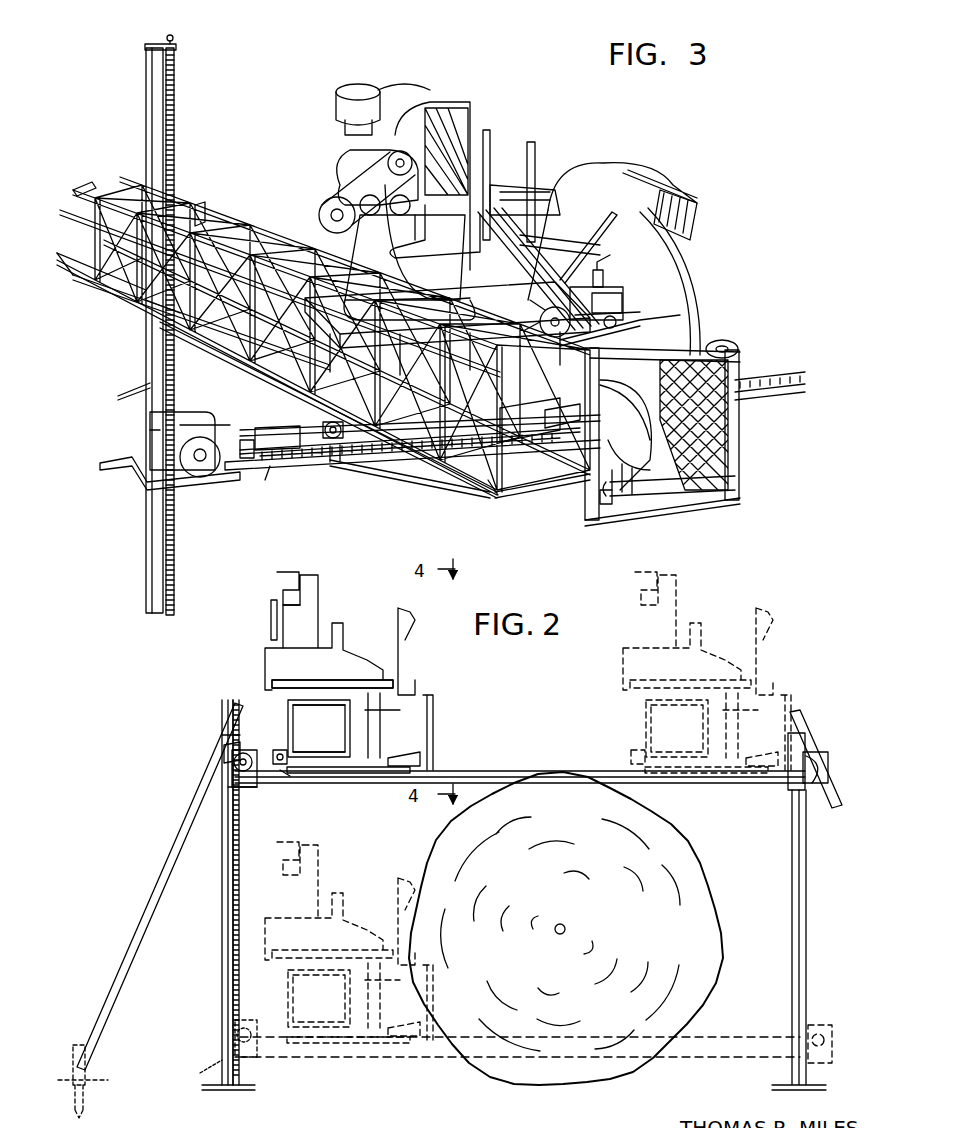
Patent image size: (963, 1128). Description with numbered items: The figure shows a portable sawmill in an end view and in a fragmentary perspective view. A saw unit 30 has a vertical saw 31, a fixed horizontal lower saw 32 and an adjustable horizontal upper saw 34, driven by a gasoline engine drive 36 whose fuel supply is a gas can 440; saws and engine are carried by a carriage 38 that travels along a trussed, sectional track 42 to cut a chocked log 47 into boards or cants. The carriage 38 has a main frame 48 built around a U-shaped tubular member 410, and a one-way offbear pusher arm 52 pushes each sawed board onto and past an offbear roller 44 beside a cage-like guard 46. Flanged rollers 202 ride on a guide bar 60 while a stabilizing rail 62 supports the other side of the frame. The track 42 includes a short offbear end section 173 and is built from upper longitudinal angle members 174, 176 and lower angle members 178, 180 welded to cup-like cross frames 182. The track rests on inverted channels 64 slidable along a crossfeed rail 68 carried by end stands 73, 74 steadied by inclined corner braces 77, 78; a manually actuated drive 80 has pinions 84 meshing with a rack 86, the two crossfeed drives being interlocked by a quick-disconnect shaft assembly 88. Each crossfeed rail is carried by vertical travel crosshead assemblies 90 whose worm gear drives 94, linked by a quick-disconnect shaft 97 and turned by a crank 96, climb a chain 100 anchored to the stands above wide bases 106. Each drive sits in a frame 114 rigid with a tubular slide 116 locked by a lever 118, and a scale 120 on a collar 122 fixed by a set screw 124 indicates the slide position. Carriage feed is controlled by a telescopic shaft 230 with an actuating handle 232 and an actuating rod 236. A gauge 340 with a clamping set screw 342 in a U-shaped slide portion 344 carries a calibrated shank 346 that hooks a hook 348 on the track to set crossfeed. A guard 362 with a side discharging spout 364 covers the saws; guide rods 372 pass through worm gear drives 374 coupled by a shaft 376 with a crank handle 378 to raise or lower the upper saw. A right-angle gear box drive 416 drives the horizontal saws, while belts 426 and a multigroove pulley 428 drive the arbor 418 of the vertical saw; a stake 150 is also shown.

In FIG. 3, the saw unit 30 is at (478, 81).
In FIG. 2, the saw unit 30 is at (350, 613).
In FIG. 3, the vertical saw 31 is at (624, 452).
In FIG. 2, the vertical saw 31 is at (413, 724).
In FIG. 2, the lower saw 32 is at (390, 754).
In FIG. 2, the upper saw 34 is at (398, 705).
In FIG. 3, the gasoline engine drive 36 is at (487, 121).
In FIG. 2, the gasoline engine drive 36 is at (258, 635).
In FIG. 3, the carriage 38 is at (242, 362).
In FIG. 3, the track 42 is at (220, 204).
In FIG. 2, the track 42 is at (282, 712).
In FIG. 3, the offbear roller 44 is at (664, 503).
In FIG. 2, the offbear roller 44 is at (405, 762).
In FIG. 3, the guard 46 is at (740, 437).
In FIG. 2, the log 47 is at (710, 850).
In FIG. 3, the main frame 48 is at (280, 387).
In FIG. 2, the main frame 48 is at (302, 680).
In FIG. 3, the offbear pusher arm 52 is at (560, 419).
In FIG. 3, the guide bar 60 is at (250, 225).
In FIG. 3, the stabilizing rail 62 is at (200, 204).
In FIG. 3, the inverted channels 64 is at (365, 457).
In FIG. 2, the crossfeed rail 68 is at (283, 778).
In FIG. 2, the end stand 73 is at (800, 955).
In FIG. 3, the end stand 74 is at (150, 577).
In FIG. 2, the end stand 74 is at (222, 947).
In FIG. 2, the corner brace 77 is at (832, 803).
In FIG. 2, the corner brace 78 is at (192, 795).
In FIG. 2, the manually actuated drive 80 is at (280, 747).
In FIG. 3, the pinion 84 is at (325, 455).
In FIG. 3, the rack 86 is at (298, 467).
In FIG. 3, the quick-disconnect shaft assembly 88 is at (118, 309).
In FIG. 3, the vertical travel crosshead assembly 90 is at (146, 425).
In FIG. 2, the vertical travel crosshead assembly 90 is at (246, 789).
In FIG. 3, the worm gear drive 94 is at (208, 467).
In FIG. 2, the worm gear drive 94 is at (235, 769).
In FIG. 3, the crank 96 is at (136, 471).
In FIG. 2, the crank 96 is at (202, 747).
In FIG. 2, the quick-disconnect shaft 97 is at (318, 784).
In FIG. 3, the chain 100 is at (172, 555).
In FIG. 2, the chain 100 is at (236, 879).
In FIG. 2, the base 106 is at (246, 1072).
In FIG. 3, the frame 114 is at (186, 419).
In FIG. 3, the tubular slide 116 is at (150, 437).
In FIG. 2, the tubular slide 116 is at (230, 737).
In FIG. 3, the lever 118 is at (142, 389).
In FIG. 3, the scale 120 is at (150, 327).
In FIG. 3, the collar 122 is at (82, 285).
In FIG. 3, the set screw 124 is at (100, 297).
In FIG. 2, the stake 150 is at (78, 1045).
In FIG. 3, the offbear end section 173 is at (478, 489).
In FIG. 3, the longitudinal angle member 174 is at (600, 369).
In FIG. 3, the longitudinal angle member 176 is at (78, 191).
In FIG. 3, the longitudinal angle member 178 is at (450, 467).
In FIG. 2, the longitudinal angle member 178 is at (302, 749).
In FIG. 3, the longitudinal angle member 180 is at (530, 428).
In FIG. 2, the longitudinal angle member 180 is at (340, 755).
In FIG. 3, the cross frame 182 is at (527, 482).
In FIG. 3, the roller 202 is at (547, 313).
In FIG. 3, the telescopic shaft 230 is at (600, 392).
In FIG. 3, the actuating handle 232 is at (570, 343).
In FIG. 3, the actuating rod 236 is at (455, 289).
In FIG. 3, the gauge 340 is at (245, 445).
In FIG. 3, the clamping set screw 342 is at (252, 467).
In FIG. 3, the slide portion 344 is at (252, 423).
In FIG. 3, the shank 346 is at (322, 421).
In FIG. 3, the hook 348 is at (335, 462).
In FIG. 3, the guard 362 is at (652, 175).
In FIG. 3, the discharging spout 364 is at (708, 201).
In FIG. 3, the guide rod 372 is at (531, 140).
In FIG. 3, the worm gear drive 374 is at (552, 201).
In FIG. 3, the shaft 376 is at (560, 259).
In FIG. 3, the crank handle 378 is at (606, 259).
In FIG. 3, the U-shaped member 410 is at (520, 297).
In FIG. 3, the right-angle gear box drive 416 is at (560, 197).
In FIG. 3, the arbor 418 is at (616, 318).
In FIG. 3, the belts 426 is at (560, 229).
In FIG. 3, the multigroove pulley 428 is at (610, 331).
In FIG. 3, the gas can 440 is at (432, 92).